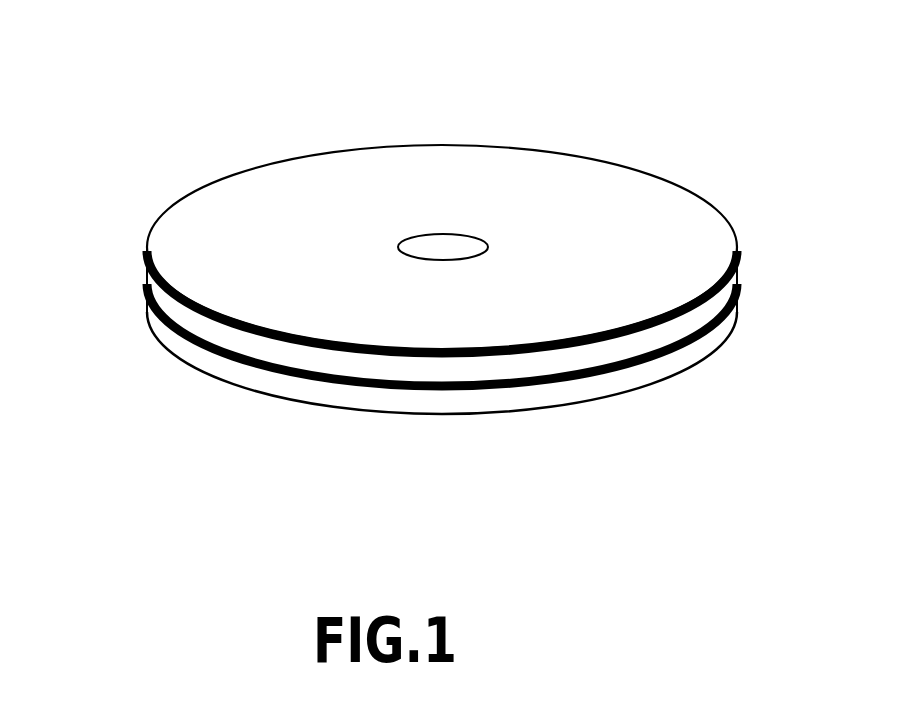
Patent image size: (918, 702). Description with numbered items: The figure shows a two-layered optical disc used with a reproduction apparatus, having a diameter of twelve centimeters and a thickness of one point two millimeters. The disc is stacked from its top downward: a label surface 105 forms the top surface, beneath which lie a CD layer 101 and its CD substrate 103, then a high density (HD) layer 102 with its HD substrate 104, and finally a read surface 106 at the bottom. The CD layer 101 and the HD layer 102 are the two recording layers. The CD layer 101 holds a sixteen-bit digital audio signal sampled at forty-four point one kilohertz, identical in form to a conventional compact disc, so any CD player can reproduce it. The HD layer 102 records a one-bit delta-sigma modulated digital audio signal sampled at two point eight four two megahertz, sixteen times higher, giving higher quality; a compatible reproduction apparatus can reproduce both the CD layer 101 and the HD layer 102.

The CD layer 101 is at (225, 323).
The high density (HD) layer 102 is at (260, 367).
The CD substrate 103 is at (165, 300).
The HD substrate 104 is at (165, 335).
The label surface 105 is at (465, 185).
The read surface 106 is at (503, 415).